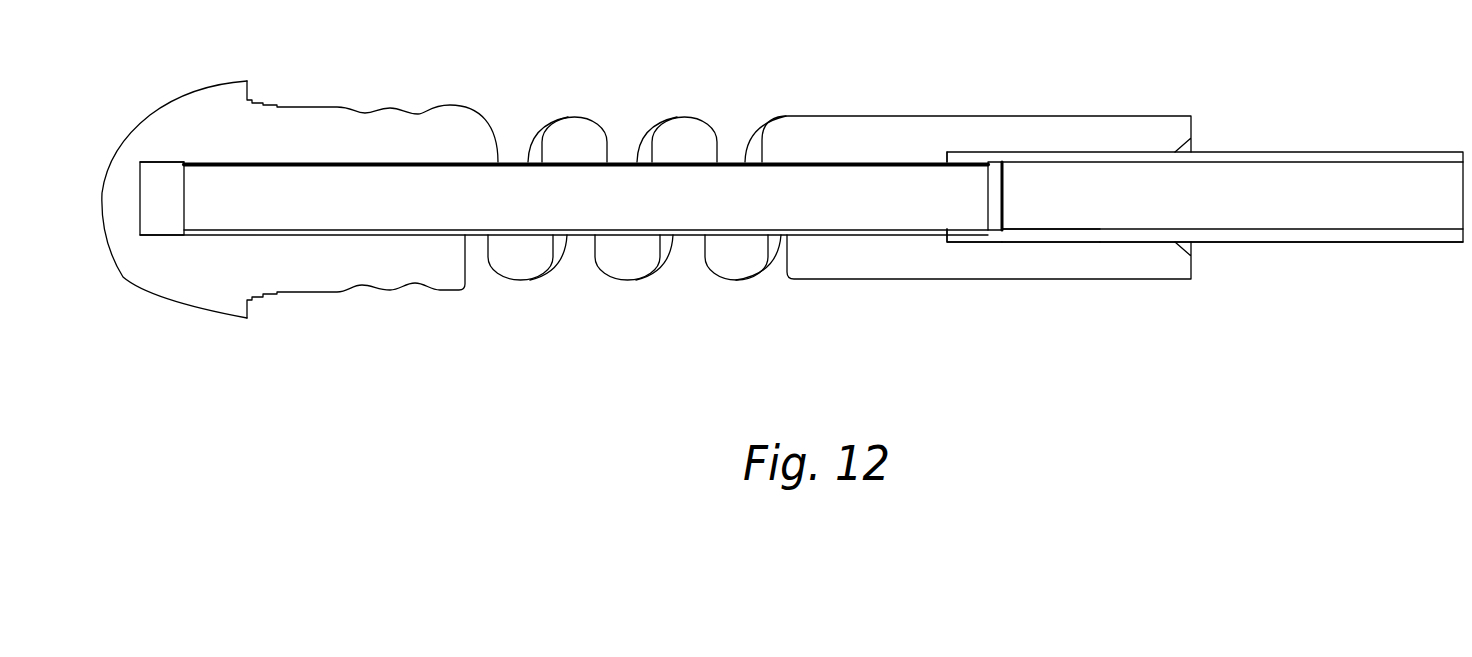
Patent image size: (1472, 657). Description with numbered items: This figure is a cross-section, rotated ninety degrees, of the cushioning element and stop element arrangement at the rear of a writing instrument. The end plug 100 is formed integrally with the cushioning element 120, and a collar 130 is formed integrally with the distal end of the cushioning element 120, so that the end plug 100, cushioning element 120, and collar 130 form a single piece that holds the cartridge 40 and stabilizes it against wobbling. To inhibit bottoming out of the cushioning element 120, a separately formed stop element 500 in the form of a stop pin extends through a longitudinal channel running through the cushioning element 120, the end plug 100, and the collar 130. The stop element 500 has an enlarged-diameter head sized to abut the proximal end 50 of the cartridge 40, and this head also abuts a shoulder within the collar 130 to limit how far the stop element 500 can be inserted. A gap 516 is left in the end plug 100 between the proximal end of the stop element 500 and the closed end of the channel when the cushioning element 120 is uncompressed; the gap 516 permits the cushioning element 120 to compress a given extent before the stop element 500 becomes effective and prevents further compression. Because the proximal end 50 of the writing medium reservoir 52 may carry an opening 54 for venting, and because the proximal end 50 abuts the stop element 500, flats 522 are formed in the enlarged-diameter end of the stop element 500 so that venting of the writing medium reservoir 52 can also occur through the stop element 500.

The cartridge 40 is at (1377, 256).
The proximal end 50 is at (1015, 232).
The writing medium reservoir 52 is at (1328, 243).
The opening 54 is at (1000, 178).
The end plug 100 is at (390, 292).
The cushioning element 120 is at (657, 287).
The collar 130 is at (905, 280).
The stop element 500 is at (769, 198).
The gap 516 is at (162, 200).
The flats 522 is at (978, 240).